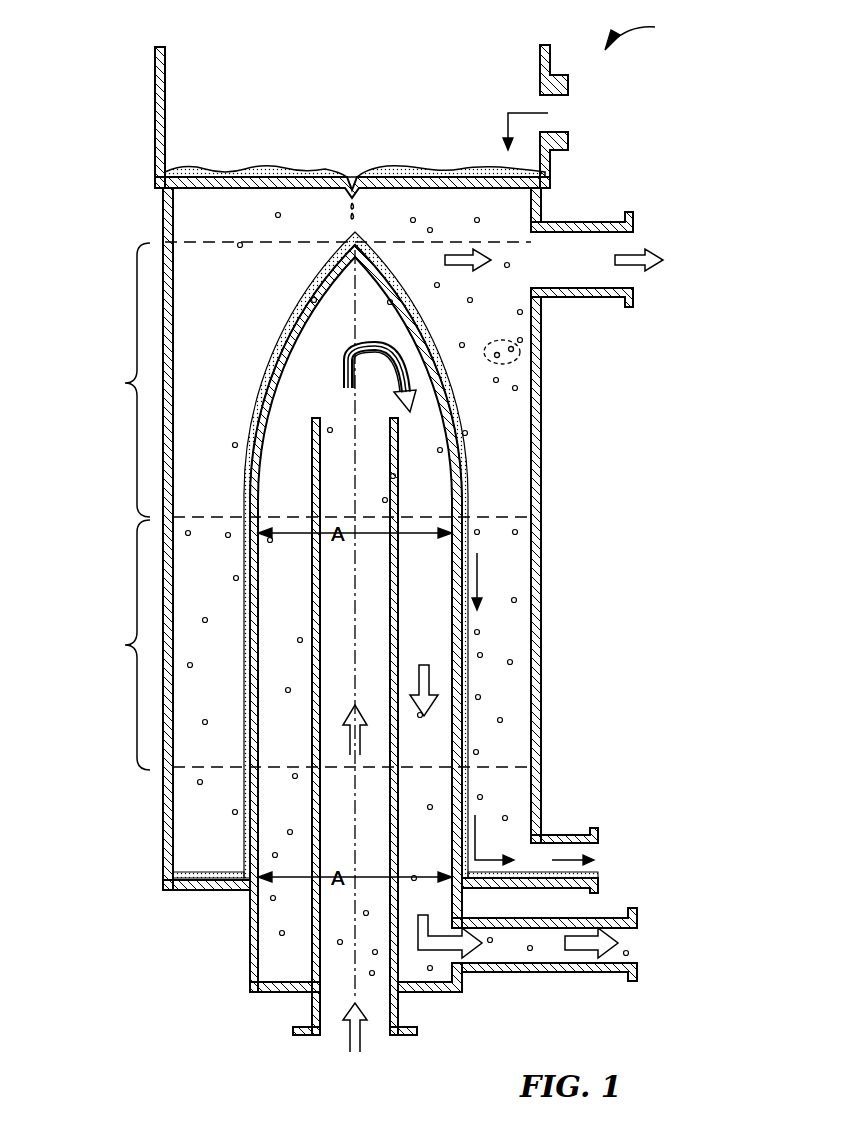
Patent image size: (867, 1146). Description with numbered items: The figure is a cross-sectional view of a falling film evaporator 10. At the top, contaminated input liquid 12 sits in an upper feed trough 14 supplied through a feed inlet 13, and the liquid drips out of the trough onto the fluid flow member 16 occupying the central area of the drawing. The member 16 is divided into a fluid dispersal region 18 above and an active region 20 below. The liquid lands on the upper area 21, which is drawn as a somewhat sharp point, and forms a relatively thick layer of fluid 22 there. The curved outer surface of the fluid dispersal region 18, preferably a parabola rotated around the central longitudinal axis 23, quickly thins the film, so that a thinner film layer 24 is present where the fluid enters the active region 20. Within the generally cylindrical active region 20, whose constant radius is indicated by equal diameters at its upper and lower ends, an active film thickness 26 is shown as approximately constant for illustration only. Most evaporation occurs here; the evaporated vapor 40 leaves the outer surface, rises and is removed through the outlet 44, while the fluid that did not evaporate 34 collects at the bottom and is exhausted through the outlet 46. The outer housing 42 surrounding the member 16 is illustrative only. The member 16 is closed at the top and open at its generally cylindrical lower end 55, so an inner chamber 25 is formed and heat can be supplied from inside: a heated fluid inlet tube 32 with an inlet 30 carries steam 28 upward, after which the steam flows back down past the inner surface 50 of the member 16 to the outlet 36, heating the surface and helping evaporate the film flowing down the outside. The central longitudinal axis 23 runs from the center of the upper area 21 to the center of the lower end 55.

The falling film evaporator 10 is at (650, 31).
The contaminated input liquid 12 is at (430, 170).
The feed inlet 13 is at (560, 108).
The upper feed trough 14 is at (170, 140).
The fluid flow member 16 is at (480, 462).
The fluid dispersal region 18 is at (121, 380).
The active region 20 is at (121, 645).
The upper area 21 is at (358, 252).
The thick layer of fluid 22 is at (312, 280).
The central longitudinal axis 23 is at (352, 910).
The thinner film layer 24 is at (248, 432).
The inner chamber 25 is at (305, 380).
The active film thickness 26 is at (248, 595).
The steam 28 is at (372, 973).
The inlet 30 is at (340, 1037).
The heated fluid inlet tube 32 is at (310, 942).
The fluid that did not evaporate 34 is at (600, 886).
The outlet 36 is at (637, 940).
The evaporated vapor 40 is at (516, 350).
The outer housing 42 is at (541, 640).
The outlet 44 is at (632, 242).
The outlet 46 is at (598, 860).
The inner surface 50 is at (445, 652).
The lower end 55 is at (245, 880).